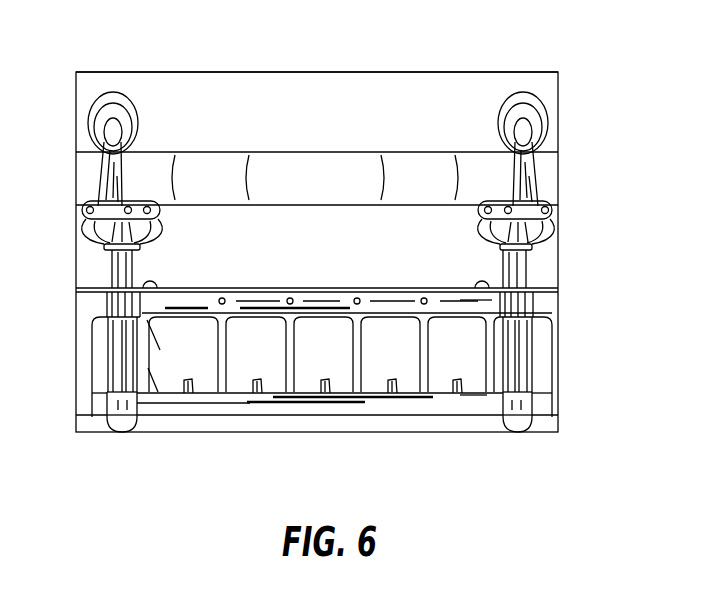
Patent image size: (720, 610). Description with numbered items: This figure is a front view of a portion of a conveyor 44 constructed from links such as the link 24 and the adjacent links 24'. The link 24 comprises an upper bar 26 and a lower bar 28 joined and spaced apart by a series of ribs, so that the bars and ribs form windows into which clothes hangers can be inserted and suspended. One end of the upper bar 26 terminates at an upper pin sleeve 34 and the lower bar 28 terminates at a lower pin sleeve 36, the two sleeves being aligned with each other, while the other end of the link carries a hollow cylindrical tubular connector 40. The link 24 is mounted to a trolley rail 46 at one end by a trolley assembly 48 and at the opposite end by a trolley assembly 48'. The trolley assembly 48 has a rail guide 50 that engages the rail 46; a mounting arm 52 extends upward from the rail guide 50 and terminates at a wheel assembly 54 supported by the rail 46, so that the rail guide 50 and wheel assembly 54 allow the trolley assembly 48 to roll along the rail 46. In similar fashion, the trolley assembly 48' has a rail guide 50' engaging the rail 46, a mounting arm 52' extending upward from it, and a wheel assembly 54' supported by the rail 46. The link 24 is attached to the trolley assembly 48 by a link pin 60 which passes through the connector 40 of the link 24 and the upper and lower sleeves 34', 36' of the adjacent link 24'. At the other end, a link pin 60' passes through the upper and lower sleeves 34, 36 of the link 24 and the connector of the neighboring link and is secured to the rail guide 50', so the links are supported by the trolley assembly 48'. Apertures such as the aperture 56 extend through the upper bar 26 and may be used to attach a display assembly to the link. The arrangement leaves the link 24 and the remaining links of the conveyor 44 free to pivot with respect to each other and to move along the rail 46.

The link 24 is at (317, 434).
The adjacent link 24' is at (541, 297).
The upper bar 26 is at (433, 300).
The lower bar 28 is at (328, 395).
The upper pin sleeve 34 is at (565, 367).
The upper pin sleeve 34' is at (69, 367).
The lower pin sleeve 36 is at (552, 412).
The lower pin sleeve 36' is at (85, 412).
The hollow cylindrical tubular connector 40 is at (113, 365).
The conveyor 44 is at (270, 108).
The trolley rail 46 is at (201, 170).
The trolley assembly 48 is at (65, 174).
The trolley assembly 48' is at (572, 171).
The rail guide 50 is at (90, 213).
The rail guide 50' is at (552, 216).
The mounting arm 52 is at (73, 164).
The mounting arm 52' is at (571, 176).
The wheel assembly 54 is at (92, 116).
The wheel assembly 54' is at (561, 118).
The aperture 56 is at (199, 393).
The link pin 60 is at (98, 253).
The link pin 60' is at (544, 253).